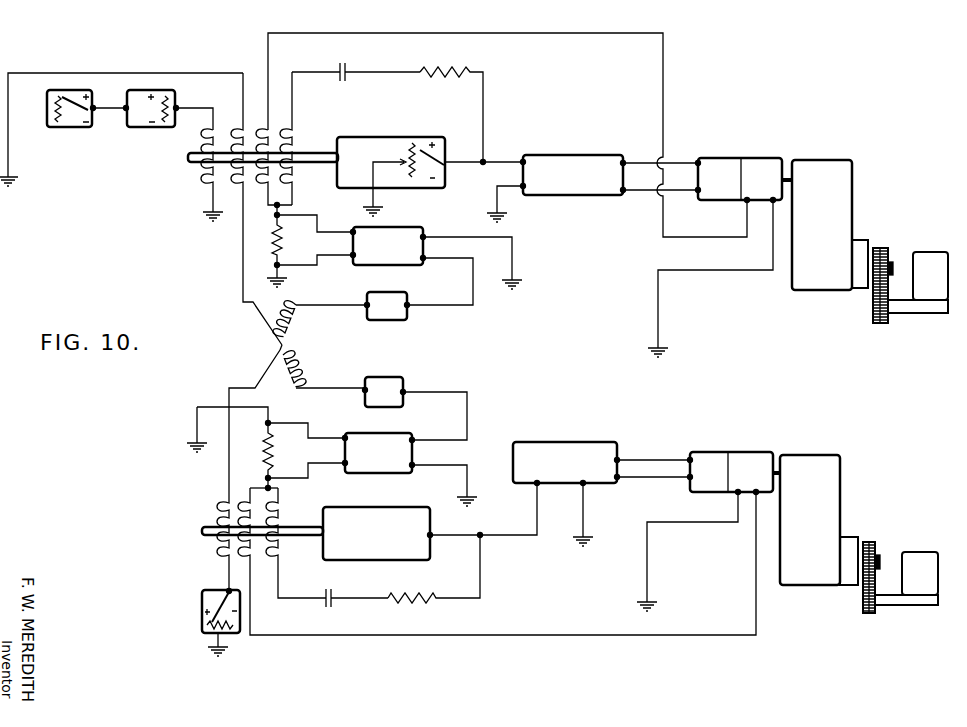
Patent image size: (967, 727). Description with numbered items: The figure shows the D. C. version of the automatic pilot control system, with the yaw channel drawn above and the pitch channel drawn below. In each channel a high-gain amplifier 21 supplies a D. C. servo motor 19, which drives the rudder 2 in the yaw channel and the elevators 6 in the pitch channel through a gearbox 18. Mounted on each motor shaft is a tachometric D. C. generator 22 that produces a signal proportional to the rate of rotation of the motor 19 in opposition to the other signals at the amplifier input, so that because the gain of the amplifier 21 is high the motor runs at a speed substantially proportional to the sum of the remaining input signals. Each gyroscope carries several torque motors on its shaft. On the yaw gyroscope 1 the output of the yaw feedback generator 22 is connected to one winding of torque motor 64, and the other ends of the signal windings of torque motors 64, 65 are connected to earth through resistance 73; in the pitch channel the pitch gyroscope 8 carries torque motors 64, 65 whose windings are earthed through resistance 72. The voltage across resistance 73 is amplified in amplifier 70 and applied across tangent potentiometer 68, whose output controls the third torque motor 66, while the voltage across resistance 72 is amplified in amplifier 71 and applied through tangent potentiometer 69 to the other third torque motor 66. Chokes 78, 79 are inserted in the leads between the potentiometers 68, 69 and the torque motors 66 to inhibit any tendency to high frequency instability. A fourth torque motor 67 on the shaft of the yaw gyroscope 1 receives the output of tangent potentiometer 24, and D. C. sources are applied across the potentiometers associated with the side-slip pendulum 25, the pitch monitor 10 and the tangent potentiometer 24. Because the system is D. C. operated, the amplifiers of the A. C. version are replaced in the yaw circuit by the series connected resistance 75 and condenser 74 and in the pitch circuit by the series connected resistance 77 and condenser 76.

The yaw gyroscope 1 is at (369, 151).
The rudder 2 is at (922, 266).
The elevators 6 is at (912, 565).
The pitch gyroscope 8 is at (378, 554).
The pitch monitor 10 is at (200, 612).
The gearbox 18 is at (808, 176).
The motor 19 is at (713, 160).
The amplifier 21 is at (553, 168).
The generator 22 is at (755, 160).
The tangent potentiometer 24 is at (68, 128).
The side-slip pendulum 25 is at (148, 128).
The torque motor 64 is at (268, 134).
The torque motor 65 is at (284, 178).
The third torque motor 66 is at (238, 133).
The fourth torque motor 67 is at (208, 180).
The tangent potentiometer 68 is at (393, 303).
The tangent potentiometer 69 is at (392, 396).
The amplifier 70 is at (405, 244).
The amplifier 71 is at (395, 451).
The resistance 72 is at (262, 469).
The resistance 73 is at (272, 249).
The condenser 74 is at (345, 83).
The resistance 75 is at (460, 73).
The condenser 76 is at (322, 598).
The resistance 77 is at (408, 600).
The choke 78 is at (298, 334).
The choke 79 is at (296, 367).